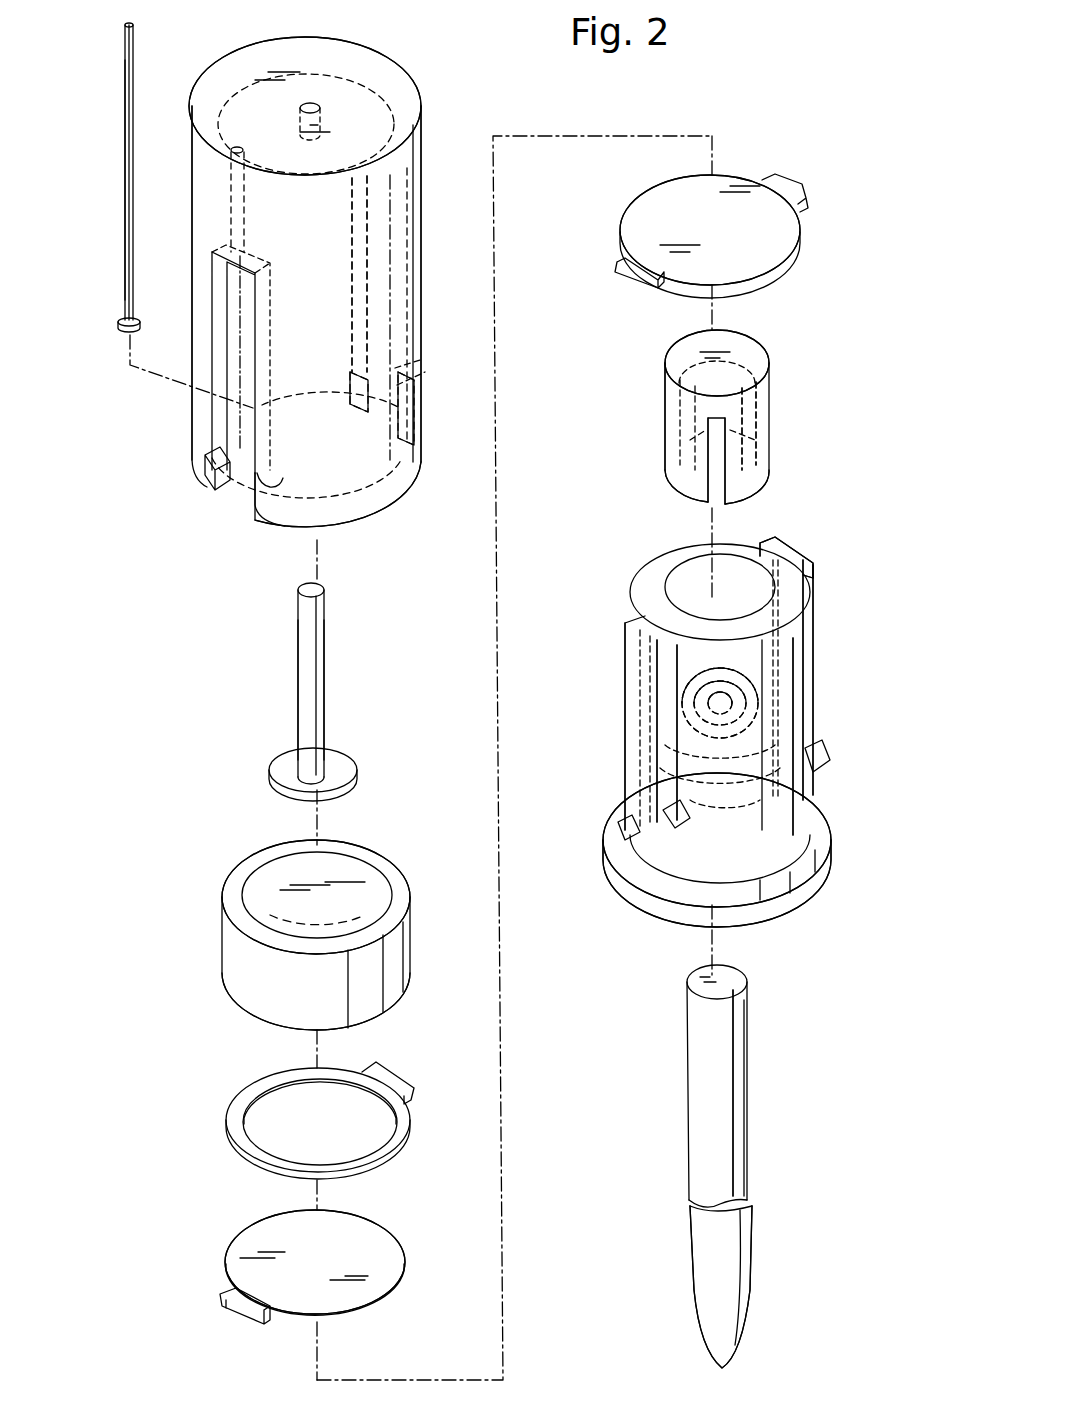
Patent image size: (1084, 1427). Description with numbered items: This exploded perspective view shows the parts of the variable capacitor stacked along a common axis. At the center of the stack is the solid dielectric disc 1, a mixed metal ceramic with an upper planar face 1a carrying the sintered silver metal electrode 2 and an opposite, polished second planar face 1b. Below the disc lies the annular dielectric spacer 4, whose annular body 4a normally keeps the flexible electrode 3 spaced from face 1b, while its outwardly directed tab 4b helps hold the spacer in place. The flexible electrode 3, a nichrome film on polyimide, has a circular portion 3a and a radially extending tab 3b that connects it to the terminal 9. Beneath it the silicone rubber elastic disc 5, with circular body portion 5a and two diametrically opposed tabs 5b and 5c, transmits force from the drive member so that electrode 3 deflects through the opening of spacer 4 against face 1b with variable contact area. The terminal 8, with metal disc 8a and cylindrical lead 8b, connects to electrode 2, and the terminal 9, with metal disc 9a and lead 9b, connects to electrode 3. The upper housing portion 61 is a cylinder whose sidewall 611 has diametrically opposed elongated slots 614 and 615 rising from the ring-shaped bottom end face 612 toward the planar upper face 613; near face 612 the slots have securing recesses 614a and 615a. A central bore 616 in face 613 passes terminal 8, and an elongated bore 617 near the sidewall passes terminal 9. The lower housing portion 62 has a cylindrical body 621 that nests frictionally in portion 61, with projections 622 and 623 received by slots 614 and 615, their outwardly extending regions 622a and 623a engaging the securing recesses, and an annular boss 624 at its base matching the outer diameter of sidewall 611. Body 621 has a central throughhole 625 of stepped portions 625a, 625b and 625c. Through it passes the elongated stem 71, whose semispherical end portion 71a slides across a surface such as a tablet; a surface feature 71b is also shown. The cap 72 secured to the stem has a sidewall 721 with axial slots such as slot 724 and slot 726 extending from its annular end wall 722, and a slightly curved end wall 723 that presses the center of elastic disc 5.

The solid dielectric disc 1 is at (223, 940).
The upper planar face 1a is at (392, 878).
The second planar face 1b is at (242, 1003).
The metal electrode 2 is at (262, 870).
The flexible electrode 3 is at (248, 1236).
The circular portion 3a is at (368, 1232).
The radially extending tab 3b is at (236, 1305).
The annular dielectric spacer 4 is at (245, 1096).
The annular body 4a is at (238, 1144).
The outwardly directed projection or tab 4b is at (392, 1080).
The elastic disc 5 is at (790, 272).
The circular body portion 5a is at (792, 240).
The outwardly directed tab 5b is at (640, 278).
The outwardly directed tab 5c is at (792, 186).
The metal terminal 8 is at (325, 590).
The metal disc 8a is at (280, 786).
The metal cylindrical lead 8b is at (318, 670).
The metal terminal 9 is at (125, 24).
The metal disc 9a is at (120, 320).
The metal cylindrical lead 9b is at (124, 115).
The top housing portion 61 is at (405, 505).
The sidewall 611 is at (421, 153).
The bottom planar end face 612 is at (292, 535).
The planar upper face 613 is at (420, 101).
The elongated slot 614 is at (222, 414).
The securing recess 614a is at (265, 492).
The elongated slot 615 is at (418, 300).
The securing recess 615a is at (455, 350).
The central axially extending bore 616 is at (312, 104).
The elongated bore 617 is at (232, 147).
The lower housing portion 62 is at (832, 856).
The cylindrical body 621 is at (800, 626).
The projection 622 is at (628, 620).
The outwardly extending region 622a is at (630, 842).
The projection 623 is at (815, 672).
The outwardly extending region 623a is at (820, 760).
The annular boss 624 is at (790, 884).
The central throughhole 625 is at (555, 660).
The throughhole portion 625a is at (645, 668).
The throughhole portion 625b is at (665, 710).
The throughhole portion 625c is at (720, 780).
The elongated stem 71 is at (748, 1125).
The end portion 71a is at (728, 1338).
The shaft flat 71b is at (735, 1028).
The cap 72 is at (668, 354).
The sidewall 721 is at (666, 406).
The annular end wall 722 is at (772, 478).
The end wall 723 is at (742, 350).
The elongated slot 724 is at (714, 500).
The elongated slot 726 is at (770, 406).